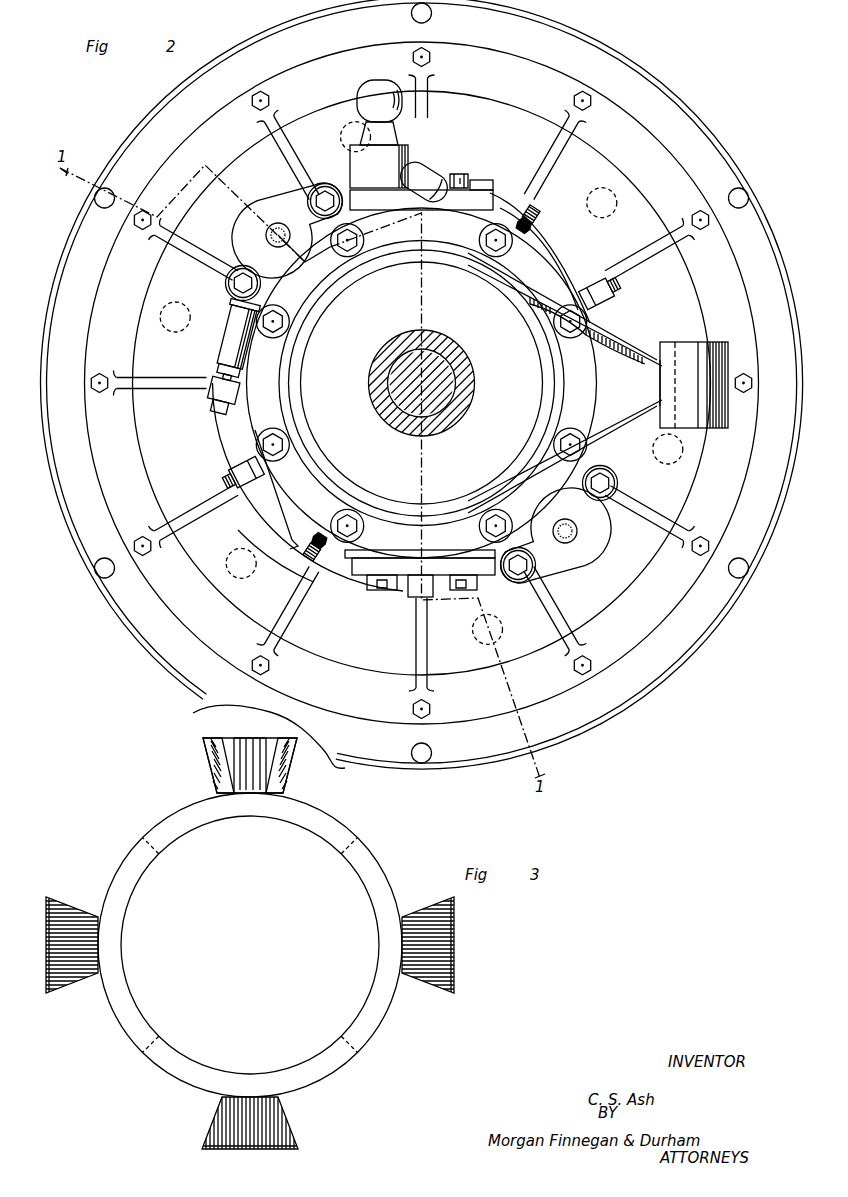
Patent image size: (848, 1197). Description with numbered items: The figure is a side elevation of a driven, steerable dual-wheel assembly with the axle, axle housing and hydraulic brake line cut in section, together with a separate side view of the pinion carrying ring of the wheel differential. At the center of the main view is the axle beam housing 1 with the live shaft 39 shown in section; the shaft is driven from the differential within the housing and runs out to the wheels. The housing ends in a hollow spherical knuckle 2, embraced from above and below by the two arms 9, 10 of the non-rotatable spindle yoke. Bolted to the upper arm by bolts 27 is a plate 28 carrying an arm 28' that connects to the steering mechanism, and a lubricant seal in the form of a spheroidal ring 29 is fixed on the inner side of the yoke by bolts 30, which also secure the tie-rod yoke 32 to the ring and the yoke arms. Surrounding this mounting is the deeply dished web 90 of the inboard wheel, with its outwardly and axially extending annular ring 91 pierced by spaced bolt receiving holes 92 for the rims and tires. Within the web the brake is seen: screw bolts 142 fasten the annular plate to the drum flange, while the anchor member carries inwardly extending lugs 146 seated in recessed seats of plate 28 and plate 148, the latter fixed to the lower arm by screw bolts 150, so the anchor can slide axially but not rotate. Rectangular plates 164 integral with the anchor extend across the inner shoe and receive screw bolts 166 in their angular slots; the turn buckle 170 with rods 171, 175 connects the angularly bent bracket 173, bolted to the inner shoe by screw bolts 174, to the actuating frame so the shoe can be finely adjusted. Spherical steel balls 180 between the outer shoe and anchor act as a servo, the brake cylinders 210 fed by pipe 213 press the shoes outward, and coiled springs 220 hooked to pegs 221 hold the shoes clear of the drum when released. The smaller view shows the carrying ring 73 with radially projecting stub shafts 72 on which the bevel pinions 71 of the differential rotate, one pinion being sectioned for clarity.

In FIG. 2, the housing 1 is at (468, 389).
In FIG. 2, the hollow spherical knuckle 2 is at (528, 362).
In FIG. 2, the arm 9 is at (500, 208).
In FIG. 2, the arm 10 is at (487, 556).
In FIG. 2, the bolts 27 is at (469, 178).
In FIG. 2, the plate 28 is at (437, 177).
In FIG. 2, the arm 28' is at (403, 143).
In FIG. 2, the spheroidal ring 29 is at (260, 416).
In FIG. 2, the bolts 30 is at (357, 522).
In FIG. 2, the tie-rod yoke 32 is at (636, 336).
In FIG. 2, the live shaft 39 is at (440, 397).
In FIG. 3, the bevel pinions 71 is at (72, 908).
In FIG. 3, the stub shafts 72 is at (232, 768).
In FIG. 3, the carrying ring 73 is at (305, 812).
In FIG. 2, the web 90 is at (690, 69).
In FIG. 2, the annular ring 91 is at (131, 141).
In FIG. 2, the bolt receiving holes 92 is at (106, 209).
In FIG. 2, the screw bolts 142 is at (146, 232).
In FIG. 2, the lugs 146 is at (412, 592).
In FIG. 2, the plate 148 is at (396, 578).
In FIG. 2, the screw bolts 150 is at (475, 584).
In FIG. 2, the rectangular plates 164 is at (264, 518).
In FIG. 2, the screw bolt 166 is at (232, 470).
In FIG. 2, the turn buckle 170 is at (228, 348).
In FIG. 2, the rod 171 is at (228, 370).
In FIG. 2, the angularly bent bracket 173 is at (225, 397).
In FIG. 2, the screw bolts 174 is at (224, 413).
In FIG. 2, the rod 175 is at (242, 300).
In FIG. 2, the spherical steel balls 180 is at (160, 316).
In FIG. 2, the brake cylinders 210 is at (266, 200).
In FIG. 2, the pipe 213 is at (264, 236).
In FIG. 2, the coiled springs 220 is at (535, 198).
In FIG. 2, the pegs 221 is at (540, 210).